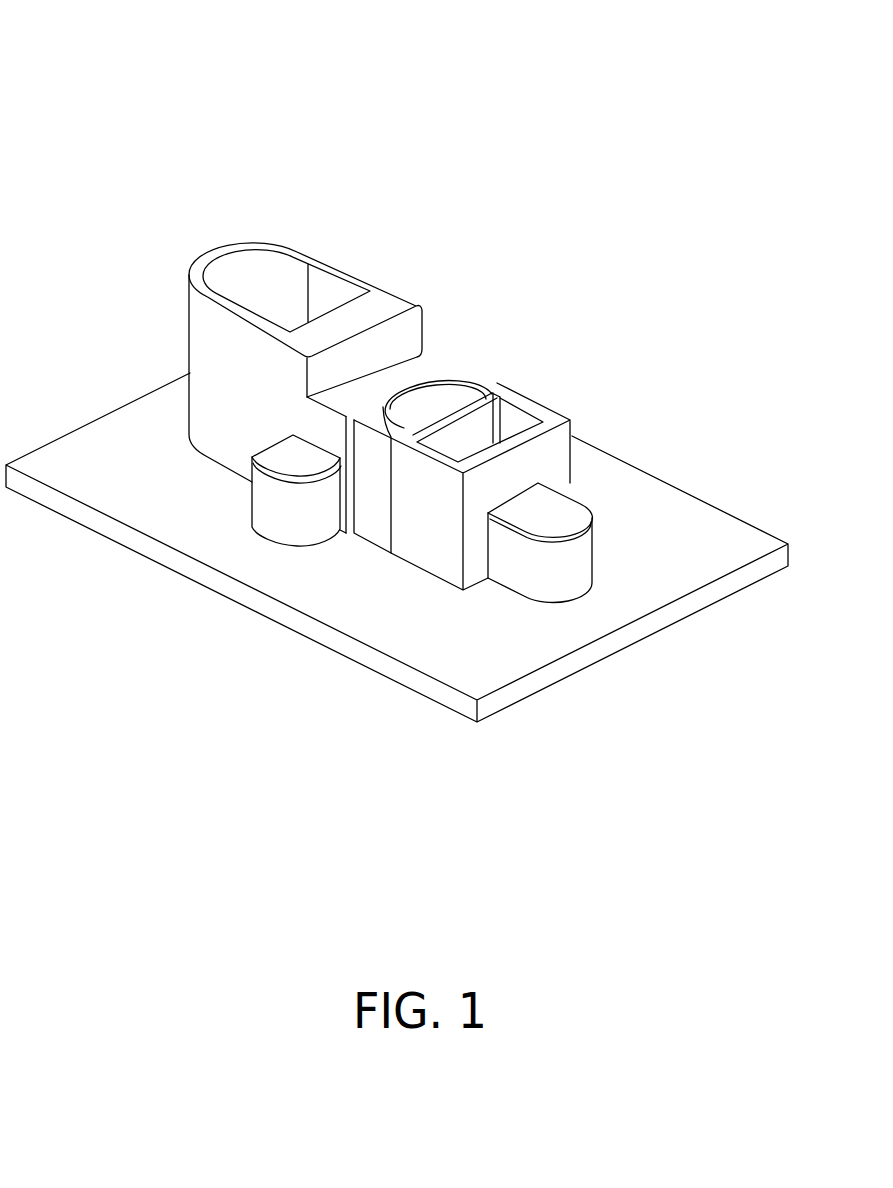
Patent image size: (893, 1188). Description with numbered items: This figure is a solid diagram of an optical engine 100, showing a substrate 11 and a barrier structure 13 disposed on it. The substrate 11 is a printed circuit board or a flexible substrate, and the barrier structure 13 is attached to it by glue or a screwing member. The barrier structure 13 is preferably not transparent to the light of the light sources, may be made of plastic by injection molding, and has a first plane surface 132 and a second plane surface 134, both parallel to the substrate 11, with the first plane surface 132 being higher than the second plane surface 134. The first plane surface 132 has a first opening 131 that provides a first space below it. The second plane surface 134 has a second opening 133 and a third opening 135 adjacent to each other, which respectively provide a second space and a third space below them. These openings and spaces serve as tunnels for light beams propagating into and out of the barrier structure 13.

The optical engine 100 is at (133, 69).
The substrate 11 is at (673, 614).
The barrier structure 13 is at (258, 351).
The first opening 131 is at (296, 272).
The first plane surface 132 is at (373, 328).
The second opening 133 is at (450, 396).
The second plane surface 134 is at (403, 378).
The third opening 135 is at (519, 411).